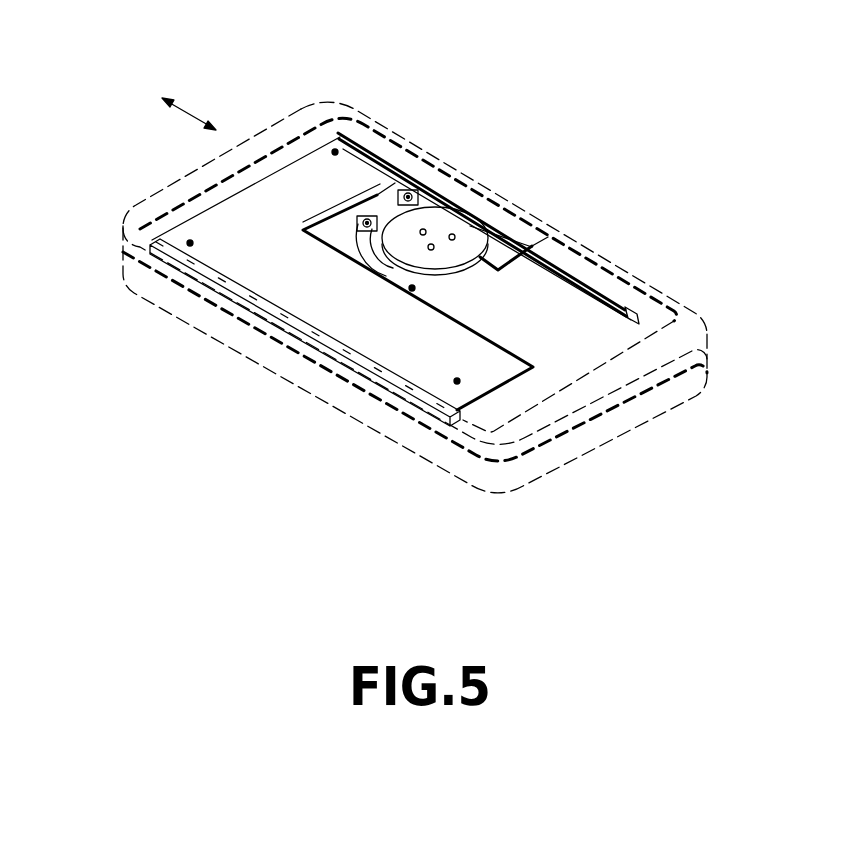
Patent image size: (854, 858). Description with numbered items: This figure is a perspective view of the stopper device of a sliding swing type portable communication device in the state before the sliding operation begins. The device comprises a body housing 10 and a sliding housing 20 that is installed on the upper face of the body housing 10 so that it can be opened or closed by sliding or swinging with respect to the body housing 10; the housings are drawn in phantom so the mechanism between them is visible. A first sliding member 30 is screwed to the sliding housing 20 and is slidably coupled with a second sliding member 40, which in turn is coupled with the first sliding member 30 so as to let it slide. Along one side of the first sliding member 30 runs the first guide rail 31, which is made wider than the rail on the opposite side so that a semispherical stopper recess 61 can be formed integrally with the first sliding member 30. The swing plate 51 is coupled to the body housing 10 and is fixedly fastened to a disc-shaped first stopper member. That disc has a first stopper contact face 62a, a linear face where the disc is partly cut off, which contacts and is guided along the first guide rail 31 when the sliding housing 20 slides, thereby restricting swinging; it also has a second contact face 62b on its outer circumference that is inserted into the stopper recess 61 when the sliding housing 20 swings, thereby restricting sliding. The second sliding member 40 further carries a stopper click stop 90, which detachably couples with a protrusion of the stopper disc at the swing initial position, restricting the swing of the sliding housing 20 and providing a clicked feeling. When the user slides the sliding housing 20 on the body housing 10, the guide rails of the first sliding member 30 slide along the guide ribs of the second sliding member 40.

The body housing 10 is at (145, 296).
The sliding housing 20 is at (150, 199).
The first sliding member 30 is at (310, 176).
The first guide rail 31 is at (630, 308).
The second sliding member 40 is at (288, 330).
The swing plate 51 is at (400, 282).
The stopper recess 61 is at (470, 218).
The first stopper contact face 62a is at (490, 232).
The second contact face 62b is at (477, 273).
The stopper click stop 90 is at (400, 190).